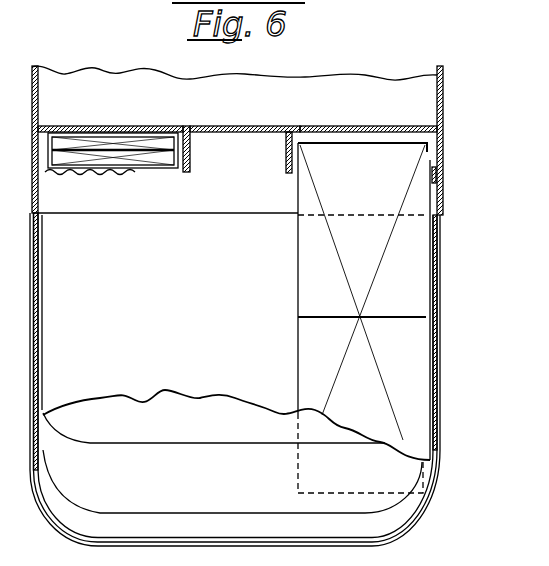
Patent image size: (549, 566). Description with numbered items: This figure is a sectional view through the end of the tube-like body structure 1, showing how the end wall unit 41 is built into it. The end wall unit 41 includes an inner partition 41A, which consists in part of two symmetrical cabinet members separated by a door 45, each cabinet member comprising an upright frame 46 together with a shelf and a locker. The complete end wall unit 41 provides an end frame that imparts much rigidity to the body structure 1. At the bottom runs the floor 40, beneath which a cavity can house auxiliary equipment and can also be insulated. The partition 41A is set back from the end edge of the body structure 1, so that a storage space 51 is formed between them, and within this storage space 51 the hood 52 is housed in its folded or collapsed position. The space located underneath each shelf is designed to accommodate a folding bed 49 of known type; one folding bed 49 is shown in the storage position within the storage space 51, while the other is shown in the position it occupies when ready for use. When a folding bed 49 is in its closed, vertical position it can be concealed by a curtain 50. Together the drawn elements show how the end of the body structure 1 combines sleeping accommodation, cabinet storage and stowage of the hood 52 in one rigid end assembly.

The body structure 1 is at (455, 181).
The floor 40 is at (414, 90).
The end wall unit 41 is at (416, 126).
The inner partition 41A is at (354, 128).
The door 45 is at (240, 126).
The upright frame 46 is at (287, 160).
The folding bed 49 is at (100, 148).
The curtain 50 is at (100, 173).
The storage space 51 is at (152, 192).
The hood 52 is at (236, 451).